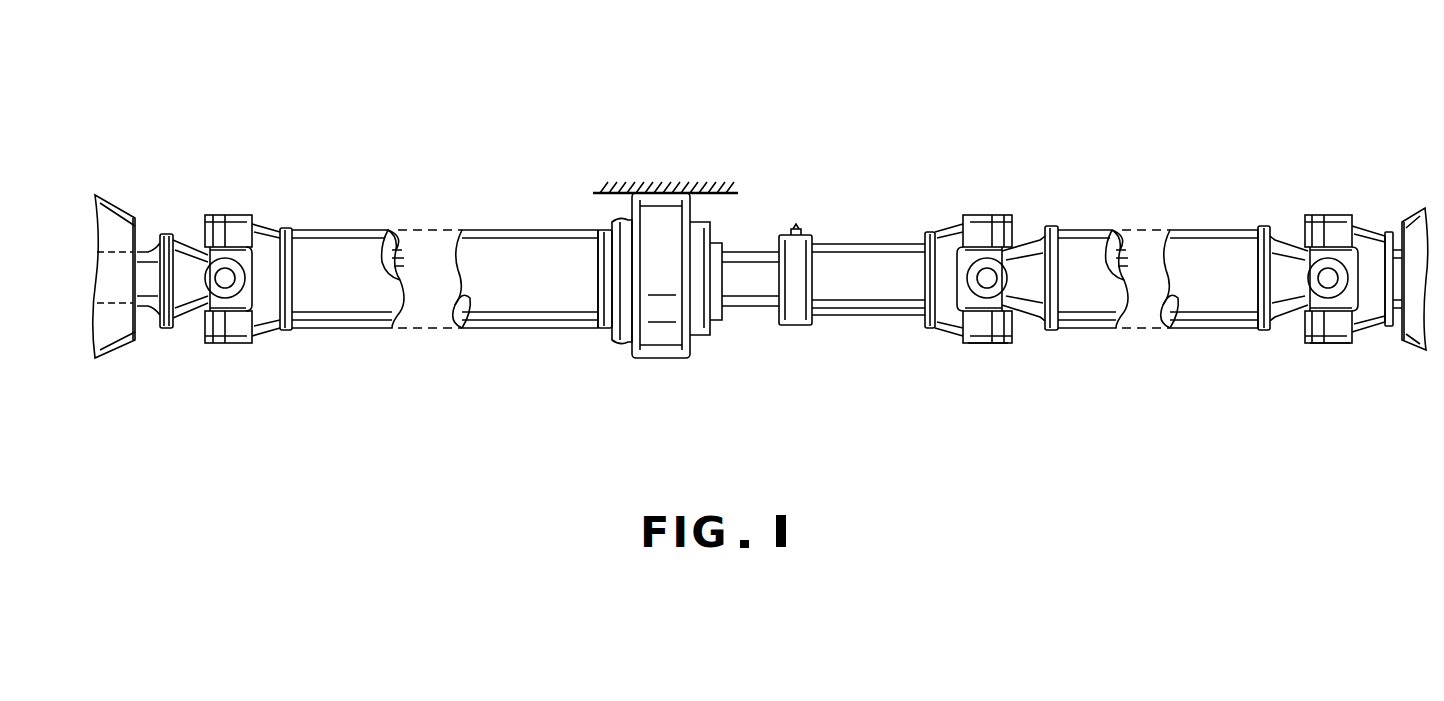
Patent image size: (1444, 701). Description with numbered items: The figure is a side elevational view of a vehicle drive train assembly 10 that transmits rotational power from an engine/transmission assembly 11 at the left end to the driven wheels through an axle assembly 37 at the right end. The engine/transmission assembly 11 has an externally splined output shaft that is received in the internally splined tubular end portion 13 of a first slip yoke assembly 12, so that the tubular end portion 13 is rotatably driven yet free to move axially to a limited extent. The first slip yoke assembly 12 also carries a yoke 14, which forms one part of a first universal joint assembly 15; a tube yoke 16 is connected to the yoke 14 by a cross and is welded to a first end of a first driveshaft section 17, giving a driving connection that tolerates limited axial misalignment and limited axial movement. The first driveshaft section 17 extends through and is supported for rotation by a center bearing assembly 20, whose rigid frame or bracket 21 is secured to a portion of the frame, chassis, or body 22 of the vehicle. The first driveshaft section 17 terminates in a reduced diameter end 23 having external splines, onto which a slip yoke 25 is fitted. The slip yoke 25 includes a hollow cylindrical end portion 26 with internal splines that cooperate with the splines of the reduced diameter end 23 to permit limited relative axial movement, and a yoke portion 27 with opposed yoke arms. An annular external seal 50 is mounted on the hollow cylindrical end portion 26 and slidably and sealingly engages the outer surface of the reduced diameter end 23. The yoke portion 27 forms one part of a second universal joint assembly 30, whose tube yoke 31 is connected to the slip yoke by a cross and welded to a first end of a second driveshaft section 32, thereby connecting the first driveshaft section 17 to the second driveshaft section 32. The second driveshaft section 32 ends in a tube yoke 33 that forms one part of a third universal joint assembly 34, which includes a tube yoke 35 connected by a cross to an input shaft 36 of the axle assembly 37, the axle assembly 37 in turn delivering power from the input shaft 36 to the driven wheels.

The drive train assembly 10 is at (990, 109).
The engine/transmission assembly 11 is at (118, 218).
The first slip yoke assembly 12 is at (170, 345).
The internally splined tubular end portion 13 is at (165, 300).
The yoke 14 is at (194, 300).
The first universal joint assembly 15 is at (225, 202).
The tube yoke 16 is at (272, 232).
The first driveshaft section 17 is at (348, 305).
The center bearing assembly 20 is at (612, 358).
The rigid frame or bracket 21 is at (667, 352).
The frame, chassis, or body 22 is at (610, 194).
The reduced diameter end 23 is at (748, 297).
The slip yoke 25 is at (882, 241).
The hollow cylindrical end portion 26 is at (845, 302).
The yoke portion 27 is at (950, 236).
The second universal joint assembly 30 is at (993, 368).
The tube yoke 31 is at (1026, 312).
The second driveshaft section 32 is at (1094, 240).
The tube yoke 33 is at (1290, 312).
The third universal joint assembly 34 is at (1320, 368).
The tube yoke 35 is at (1318, 218).
The input shaft 36 is at (1396, 232).
The axle assembly 37 is at (1410, 336).
The annular external seal 50 is at (797, 231).